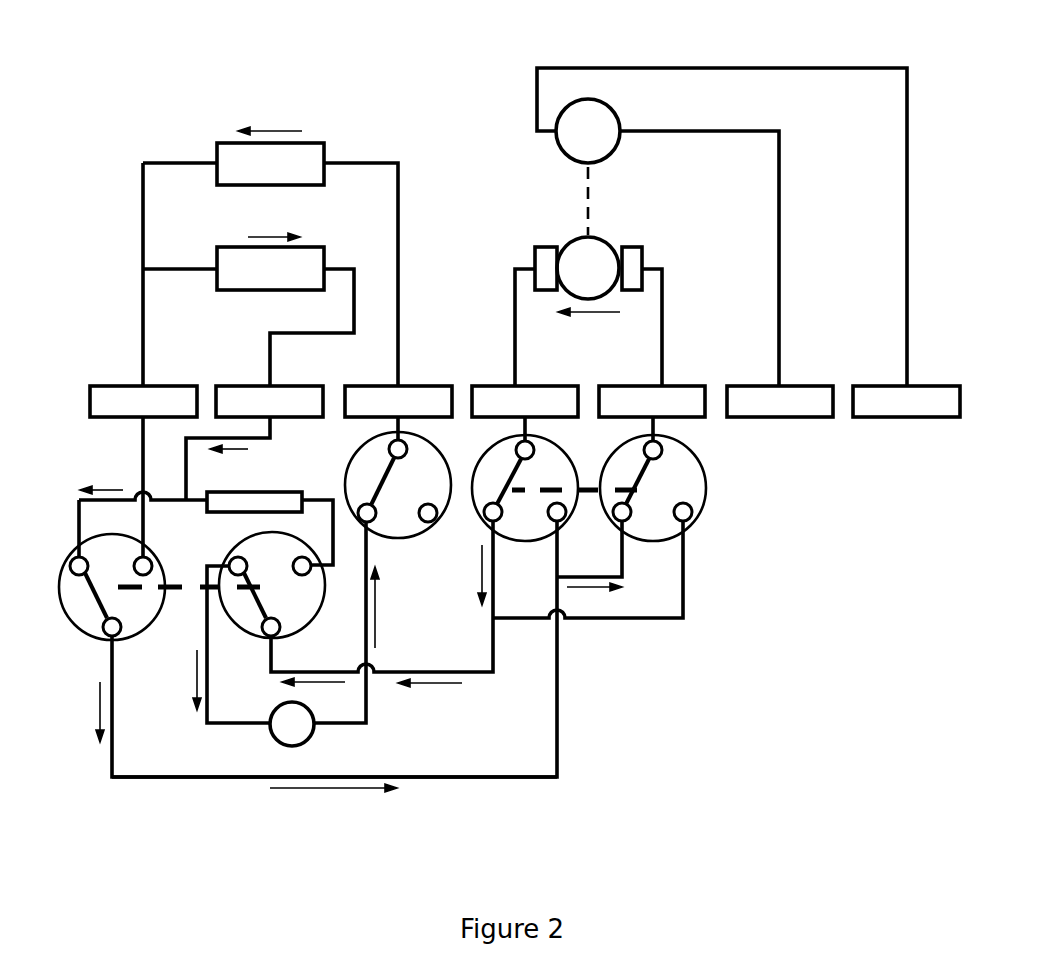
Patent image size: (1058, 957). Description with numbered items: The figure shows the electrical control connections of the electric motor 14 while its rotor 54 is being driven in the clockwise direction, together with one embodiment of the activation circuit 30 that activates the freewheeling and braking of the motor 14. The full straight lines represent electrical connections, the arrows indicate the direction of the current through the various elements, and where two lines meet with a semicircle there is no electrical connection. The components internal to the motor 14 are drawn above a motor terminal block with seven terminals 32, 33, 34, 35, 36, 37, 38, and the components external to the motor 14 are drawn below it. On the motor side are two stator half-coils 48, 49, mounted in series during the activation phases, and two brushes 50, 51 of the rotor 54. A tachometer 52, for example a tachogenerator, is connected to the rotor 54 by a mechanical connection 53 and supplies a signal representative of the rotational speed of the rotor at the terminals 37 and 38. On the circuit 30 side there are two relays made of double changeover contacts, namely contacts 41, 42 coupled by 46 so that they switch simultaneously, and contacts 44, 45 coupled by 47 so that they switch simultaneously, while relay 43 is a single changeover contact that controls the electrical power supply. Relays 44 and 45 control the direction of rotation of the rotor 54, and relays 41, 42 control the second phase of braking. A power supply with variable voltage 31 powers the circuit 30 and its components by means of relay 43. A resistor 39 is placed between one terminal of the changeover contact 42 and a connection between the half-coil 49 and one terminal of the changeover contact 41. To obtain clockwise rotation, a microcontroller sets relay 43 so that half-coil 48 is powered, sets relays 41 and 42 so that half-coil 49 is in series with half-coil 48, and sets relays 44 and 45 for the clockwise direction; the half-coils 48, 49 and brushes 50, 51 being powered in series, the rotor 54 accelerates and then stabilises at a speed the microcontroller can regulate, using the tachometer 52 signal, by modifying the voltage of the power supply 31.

The motor 14 is at (120, 88).
The activation circuit embodiment 30 is at (762, 669).
The power supply with variable voltage 31 is at (298, 732).
The terminal 32 is at (117, 392).
The terminal 33 is at (245, 392).
The terminal 34 is at (420, 392).
The terminal 35 is at (498, 392).
The terminal 36 is at (637, 392).
The terminal 37 is at (753, 392).
The terminal 38 is at (886, 392).
The resistor 39 is at (281, 502).
The changeover contact 41 is at (88, 620).
The changeover contact 42 is at (292, 620).
The relay 43 is at (423, 460).
The changeover contact 44 is at (552, 460).
The changeover contact 45 is at (678, 460).
The relay coupling 46 is at (185, 590).
The relay coupling 47 is at (593, 493).
The half-coil 48 is at (228, 152).
The half-coil 49 is at (238, 258).
The brush 50 is at (547, 285).
The brush 51 is at (632, 253).
The tachometer 52 is at (610, 122).
The mechanical connection 53 is at (585, 185).
The rotor 54 is at (588, 250).